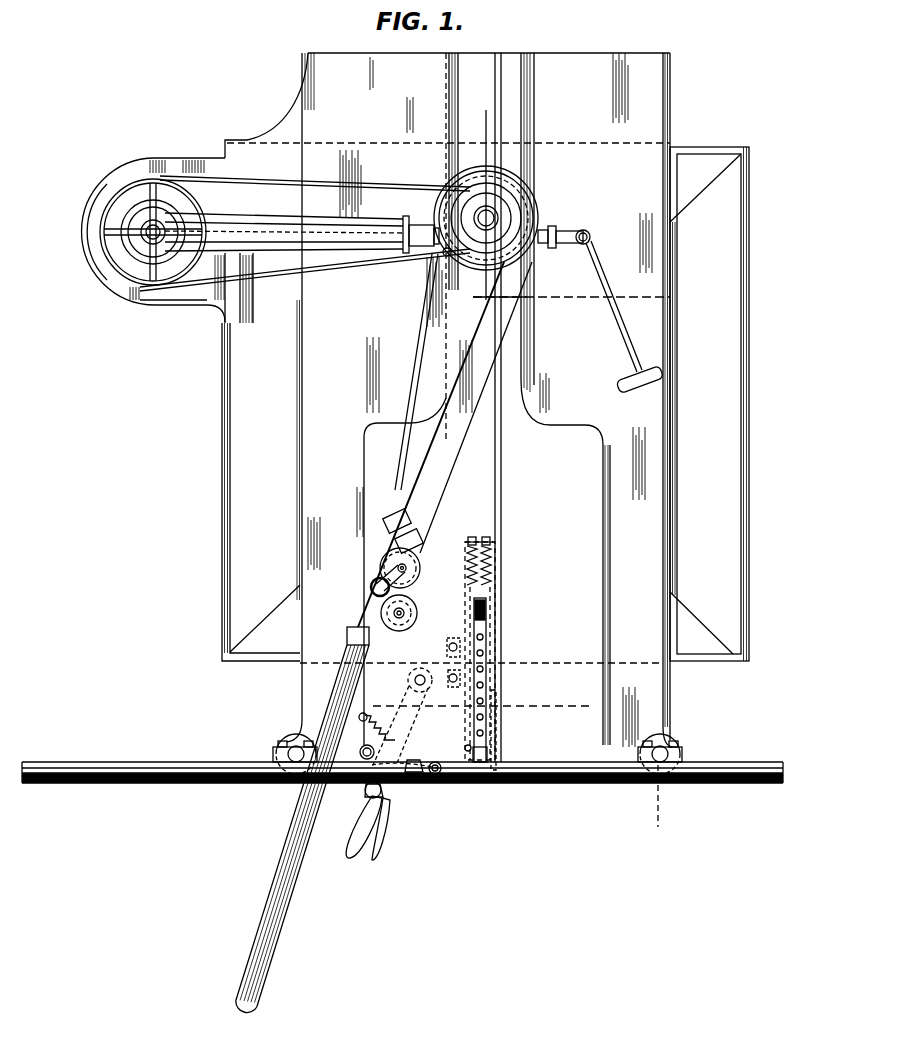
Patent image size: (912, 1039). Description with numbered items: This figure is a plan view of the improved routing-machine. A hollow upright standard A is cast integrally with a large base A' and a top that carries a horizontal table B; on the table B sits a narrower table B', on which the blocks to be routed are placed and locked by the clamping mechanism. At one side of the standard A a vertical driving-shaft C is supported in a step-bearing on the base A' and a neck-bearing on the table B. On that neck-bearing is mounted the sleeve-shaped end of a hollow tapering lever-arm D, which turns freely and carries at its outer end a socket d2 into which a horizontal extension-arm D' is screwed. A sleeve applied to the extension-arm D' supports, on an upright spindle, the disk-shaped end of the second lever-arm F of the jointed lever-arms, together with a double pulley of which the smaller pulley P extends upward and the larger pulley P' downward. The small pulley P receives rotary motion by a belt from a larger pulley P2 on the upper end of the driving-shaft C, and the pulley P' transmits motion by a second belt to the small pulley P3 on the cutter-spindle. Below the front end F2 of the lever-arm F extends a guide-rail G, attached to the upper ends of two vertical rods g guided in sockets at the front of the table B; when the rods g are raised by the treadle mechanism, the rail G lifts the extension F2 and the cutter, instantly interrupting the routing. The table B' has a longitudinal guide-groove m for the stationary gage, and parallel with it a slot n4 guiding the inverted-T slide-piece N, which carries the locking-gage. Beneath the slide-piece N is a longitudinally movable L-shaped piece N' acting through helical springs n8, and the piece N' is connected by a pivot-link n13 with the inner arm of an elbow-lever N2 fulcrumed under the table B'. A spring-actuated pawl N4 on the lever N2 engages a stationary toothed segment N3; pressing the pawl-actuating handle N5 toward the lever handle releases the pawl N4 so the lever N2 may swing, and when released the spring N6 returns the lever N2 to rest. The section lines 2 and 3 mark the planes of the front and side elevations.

The hollow upright standard A is at (624, 404).
The base A' is at (243, 492).
The horizontal table B is at (401, 400).
The narrower table B' is at (466, 571).
The vertical shaft C is at (137, 247).
The hollow tapering lever-arm D is at (414, 295).
The horizontal extension-arm D' is at (476, 266).
The socket d2 is at (410, 224).
The small pulley P is at (502, 218).
The large pulley P' is at (466, 219).
The large pulley on driving-shaft P2 is at (105, 200).
The small pulley on cutter-spindle P3 is at (408, 613).
The second lever-arm F is at (412, 396).
The front end of lever-arm F2 is at (278, 872).
The guide-rail G is at (78, 784).
The vertical rods g is at (273, 751).
The longitudinal guide-groove m is at (502, 470).
The slide-piece N is at (489, 680).
The L-shaped piece N' is at (499, 648).
The elbow-lever N2 is at (404, 738).
The toothed segment N3 is at (410, 768).
The pawl N4 is at (366, 793).
The pawl-actuating handle N5 is at (370, 832).
The spring N6 is at (378, 732).
The slot n4 is at (480, 773).
The helical springs n8 is at (486, 563).
The pivot-link n13 is at (447, 650).
The section line 2 2 is at (481, 706).
The section line 3 3 is at (566, 473).